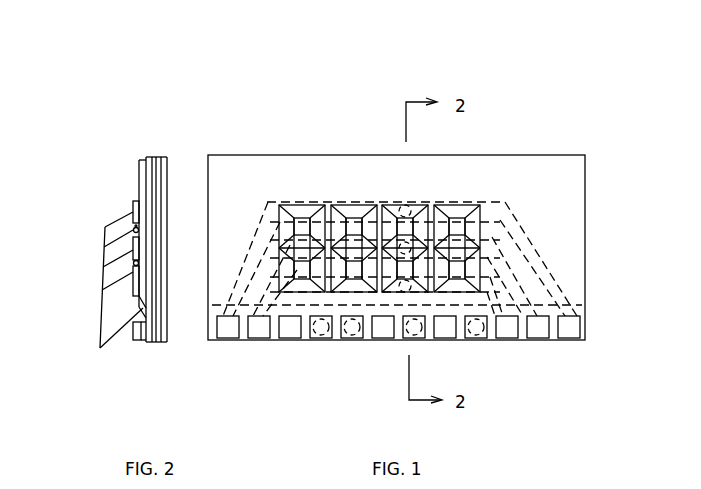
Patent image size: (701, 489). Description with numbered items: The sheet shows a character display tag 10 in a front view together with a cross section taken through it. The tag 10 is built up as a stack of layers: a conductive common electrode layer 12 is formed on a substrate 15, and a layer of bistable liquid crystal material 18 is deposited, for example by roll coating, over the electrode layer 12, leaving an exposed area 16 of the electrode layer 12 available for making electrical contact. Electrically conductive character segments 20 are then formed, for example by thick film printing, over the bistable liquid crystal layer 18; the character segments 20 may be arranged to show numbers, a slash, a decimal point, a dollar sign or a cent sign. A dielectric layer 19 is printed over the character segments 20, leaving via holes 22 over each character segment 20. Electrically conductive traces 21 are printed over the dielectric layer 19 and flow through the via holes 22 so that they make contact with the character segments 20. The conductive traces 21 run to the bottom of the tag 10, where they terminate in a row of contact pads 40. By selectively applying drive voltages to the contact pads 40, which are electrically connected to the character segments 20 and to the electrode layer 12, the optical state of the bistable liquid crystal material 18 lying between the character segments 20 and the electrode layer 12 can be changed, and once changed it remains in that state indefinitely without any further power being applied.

In FIG. 1, the character display tag 10 is at (431, 207).
In FIG. 2, the character display tag 10 is at (186, 386).
In FIG. 2, the conductive common electrode layer 12 is at (154, 160).
In FIG. 2, the substrate 15 is at (167, 157).
In FIG. 1, the exposed area 16 is at (582, 312).
In FIG. 2, the bistable liquid crystal material layer 18 is at (151, 163).
In FIG. 2, the dielectric layer 19 is at (143, 170).
In FIG. 1, the character segments 20 is at (307, 210).
In FIG. 2, the character segments 20 is at (138, 203).
In FIG. 1, the conductive traces 21 is at (500, 203).
In FIG. 2, the conductive traces 21 is at (100, 348).
In FIG. 1, the via holes 22 is at (403, 207).
In FIG. 2, the via holes 22 is at (145, 328).
In FIG. 1, the contact pads 40 is at (565, 338).
In FIG. 2, the contact pads 40 is at (145, 323).